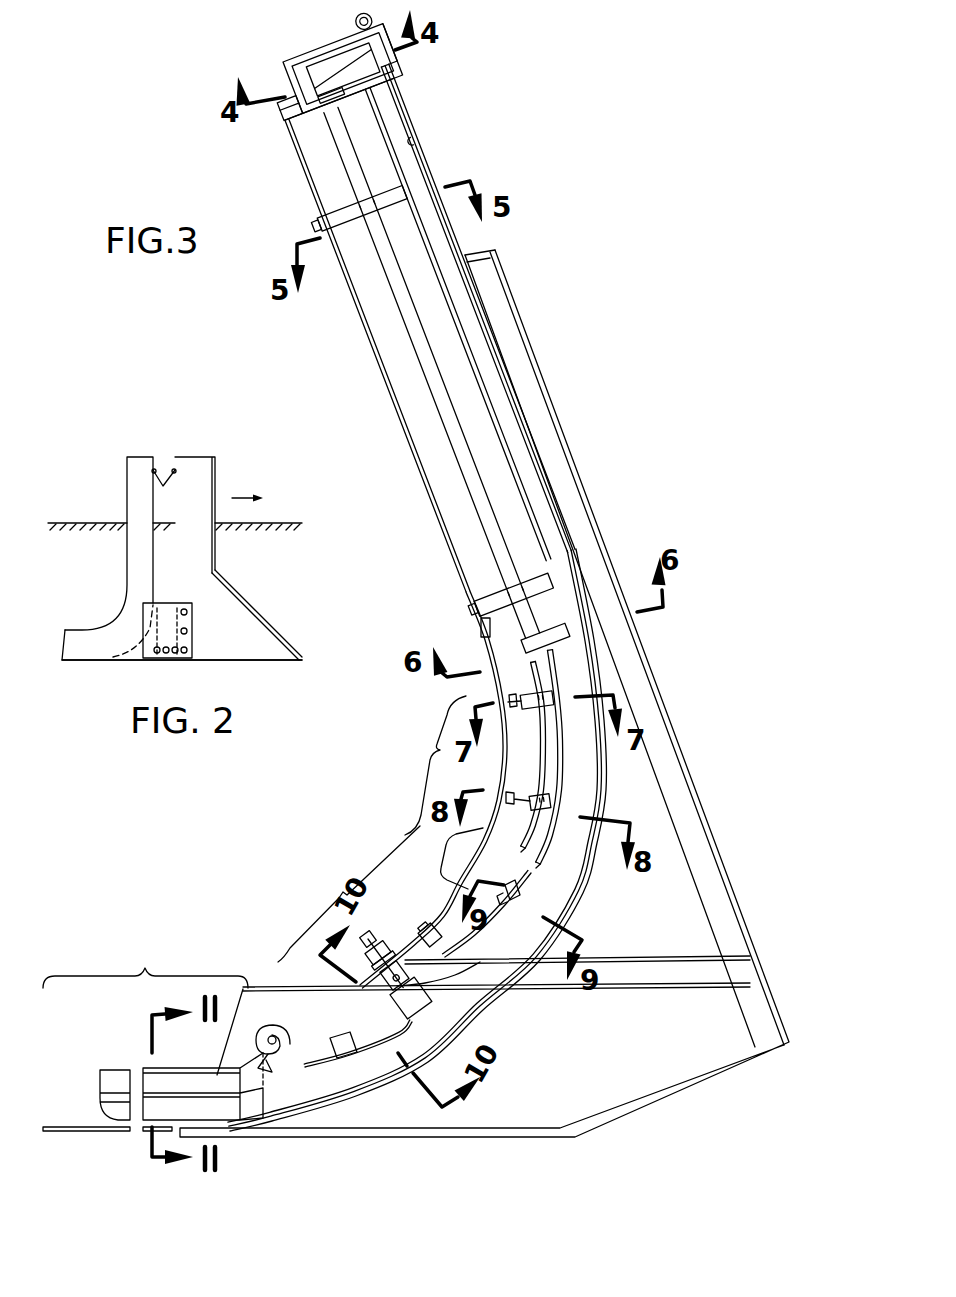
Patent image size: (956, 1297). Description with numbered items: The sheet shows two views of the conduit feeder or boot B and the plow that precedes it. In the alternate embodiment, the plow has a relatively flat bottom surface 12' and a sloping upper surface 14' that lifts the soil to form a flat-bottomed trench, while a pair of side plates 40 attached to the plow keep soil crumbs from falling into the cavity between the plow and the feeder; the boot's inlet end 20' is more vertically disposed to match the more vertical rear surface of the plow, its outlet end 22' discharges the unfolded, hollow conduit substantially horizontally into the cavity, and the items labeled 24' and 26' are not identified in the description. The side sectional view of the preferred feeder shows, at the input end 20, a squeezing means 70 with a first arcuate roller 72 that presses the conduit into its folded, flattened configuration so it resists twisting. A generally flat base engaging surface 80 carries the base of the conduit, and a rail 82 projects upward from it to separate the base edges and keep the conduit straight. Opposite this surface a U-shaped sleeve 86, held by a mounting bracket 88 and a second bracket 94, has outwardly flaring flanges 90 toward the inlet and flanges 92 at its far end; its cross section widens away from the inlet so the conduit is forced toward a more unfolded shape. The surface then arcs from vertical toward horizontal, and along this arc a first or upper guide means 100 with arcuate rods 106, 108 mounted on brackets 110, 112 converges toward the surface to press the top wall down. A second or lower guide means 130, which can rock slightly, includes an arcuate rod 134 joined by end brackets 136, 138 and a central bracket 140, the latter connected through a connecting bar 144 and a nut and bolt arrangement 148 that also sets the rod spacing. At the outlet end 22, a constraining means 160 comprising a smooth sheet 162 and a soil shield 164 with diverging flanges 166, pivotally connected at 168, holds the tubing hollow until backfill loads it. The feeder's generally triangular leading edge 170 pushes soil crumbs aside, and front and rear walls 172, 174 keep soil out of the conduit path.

In FIG. 3, the input end 20 is at (391, 301).
In FIG. 3, the first arcuate roller 72 is at (323, 66).
In FIG. 3, the flanges 90 is at (330, 93).
In FIG. 3, the squeezing means 70 is at (272, 114).
In FIG. 3, the base engaging surface 80 is at (414, 140).
In FIG. 3, the rail 82 is at (420, 173).
In FIG. 3, the U-shaped sleeve 86 is at (345, 162).
In FIG. 3, the mounting bracket 88 is at (342, 216).
In FIG. 3, the front wall 172 is at (467, 255).
In FIG. 3, the leading edge 170 is at (502, 264).
In FIG. 3, the rear wall 174 is at (403, 434).
In FIG. 3, the second bracket 94 is at (492, 598).
In FIG. 3, the flanges 92 is at (560, 637).
In FIG. 3, the mounting bracket 110 is at (528, 694).
In FIG. 3, the first or upper guide means 100 is at (440, 792).
In FIG. 3, the arcuate rod 106 is at (541, 734).
In FIG. 3, the arcuate rod 108 is at (562, 782).
In FIG. 3, the second mounting bracket 112 is at (532, 808).
In FIG. 3, the bracket 136 is at (511, 889).
In FIG. 3, the second arcuate rod 134 is at (540, 886).
In FIG. 3, the second or lower guide means 130 is at (349, 894).
In FIG. 3, the connecting bar 144 is at (419, 957).
In FIG. 3, the constraining means 160 is at (145, 963).
In FIG. 3, the nut and bolt arrangement 148 is at (456, 968).
In FIG. 3, the pivotal connection 168 is at (274, 1036).
In FIG. 3, the bracket 138 is at (343, 1038).
In FIG. 3, the outlet end 22 is at (460, 1015).
In FIG. 3, the soil shield 164 is at (113, 1068).
In FIG. 3, the bracket 140 is at (430, 1008).
In FIG. 3, the diverging flanges 166 is at (248, 1108).
In FIG. 3, the sheet 162 is at (60, 1133).
In FIG. 2, the inlet end 20' is at (138, 524).
In FIG. 2, the driving force 24' is at (206, 443).
In FIG. 2, the outlet end 22' is at (170, 591).
In FIG. 2, the sloping upper surface 14' is at (262, 614).
In FIG. 2, the flat bottom surface 12' is at (182, 677).
In FIG. 2, the side plates 40 is at (187, 630).
In FIG. 2, the embedded portion 26' is at (139, 650).